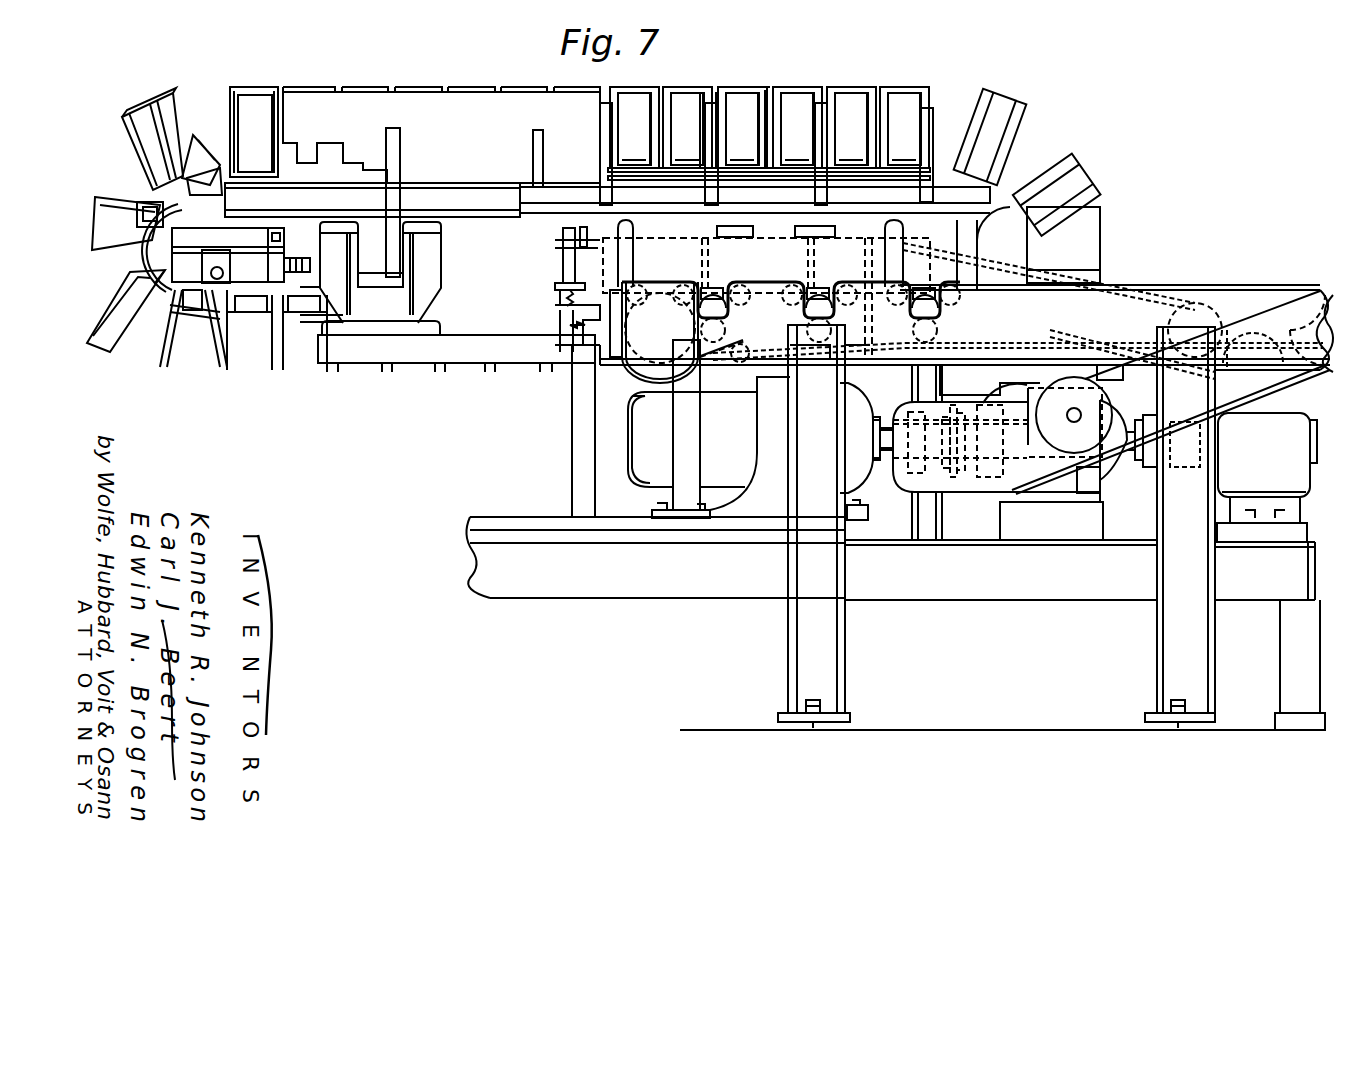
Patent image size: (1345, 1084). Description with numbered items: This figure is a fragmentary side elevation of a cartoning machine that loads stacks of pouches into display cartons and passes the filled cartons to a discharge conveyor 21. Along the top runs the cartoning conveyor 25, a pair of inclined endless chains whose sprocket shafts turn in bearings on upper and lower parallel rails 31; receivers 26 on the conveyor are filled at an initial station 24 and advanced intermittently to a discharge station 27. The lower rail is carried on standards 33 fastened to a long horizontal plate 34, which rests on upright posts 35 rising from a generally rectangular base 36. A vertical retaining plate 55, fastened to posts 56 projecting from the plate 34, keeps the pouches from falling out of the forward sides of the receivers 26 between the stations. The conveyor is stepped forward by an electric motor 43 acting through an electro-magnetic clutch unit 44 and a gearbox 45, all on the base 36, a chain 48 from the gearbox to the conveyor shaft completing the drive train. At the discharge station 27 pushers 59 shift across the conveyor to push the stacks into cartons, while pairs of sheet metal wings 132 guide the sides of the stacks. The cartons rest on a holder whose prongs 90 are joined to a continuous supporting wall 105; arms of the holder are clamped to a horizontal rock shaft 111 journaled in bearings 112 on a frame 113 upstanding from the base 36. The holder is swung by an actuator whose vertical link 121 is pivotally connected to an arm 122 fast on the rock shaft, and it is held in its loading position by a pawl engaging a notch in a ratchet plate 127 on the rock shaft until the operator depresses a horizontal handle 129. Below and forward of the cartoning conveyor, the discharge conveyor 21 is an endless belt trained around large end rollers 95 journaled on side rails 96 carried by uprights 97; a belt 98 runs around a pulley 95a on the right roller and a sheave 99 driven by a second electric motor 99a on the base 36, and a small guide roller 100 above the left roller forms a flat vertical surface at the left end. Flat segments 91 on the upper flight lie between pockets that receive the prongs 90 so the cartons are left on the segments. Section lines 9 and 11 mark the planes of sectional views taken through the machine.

The section line 9- 9 is at (855, 52).
The section line 11- 11 is at (553, 165).
The discharge conveyor 21 is at (1192, 287).
The initial station 24 is at (237, 65).
The cartoning conveyor 25 is at (933, 90).
The receivers 26 is at (161, 100).
The discharge station 27 is at (778, 63).
The rails 31 is at (455, 200).
The standards 33 is at (441, 249).
The horizontal plate 34 is at (472, 363).
The upright posts 35 is at (572, 421).
The base 36 is at (707, 597).
The electric motor 43 is at (655, 478).
The electro-magnetic clutch unit 44 is at (1093, 483).
The gearbox 45 is at (1230, 478).
The chain 48 is at (1195, 306).
The vertical retaining plate 55 is at (445, 98).
The posts 56 is at (400, 132).
The pushers 59 is at (793, 103).
The prongs 90 is at (726, 286).
The flat segments 91 is at (652, 288).
The end rollers 95 is at (655, 372).
The pulley 95a is at (1313, 297).
The side rails 96 is at (958, 360).
The uprights 97 is at (1160, 634).
The belt 98 is at (1225, 405).
The sheave 99 is at (1050, 432).
The second electric motor 99a is at (957, 486).
The guide roller 100 is at (636, 292).
The supporting wall 105 is at (773, 252).
The rock shaft 111 is at (598, 230).
The bearings 112 is at (633, 224).
The frame 113 is at (695, 421).
The vertical link 121 is at (866, 372).
The arm 122 is at (850, 250).
The ratchet plate 127 is at (563, 264).
The horizontal handle 129 is at (562, 293).
The sheet metal wings 132 is at (720, 98).